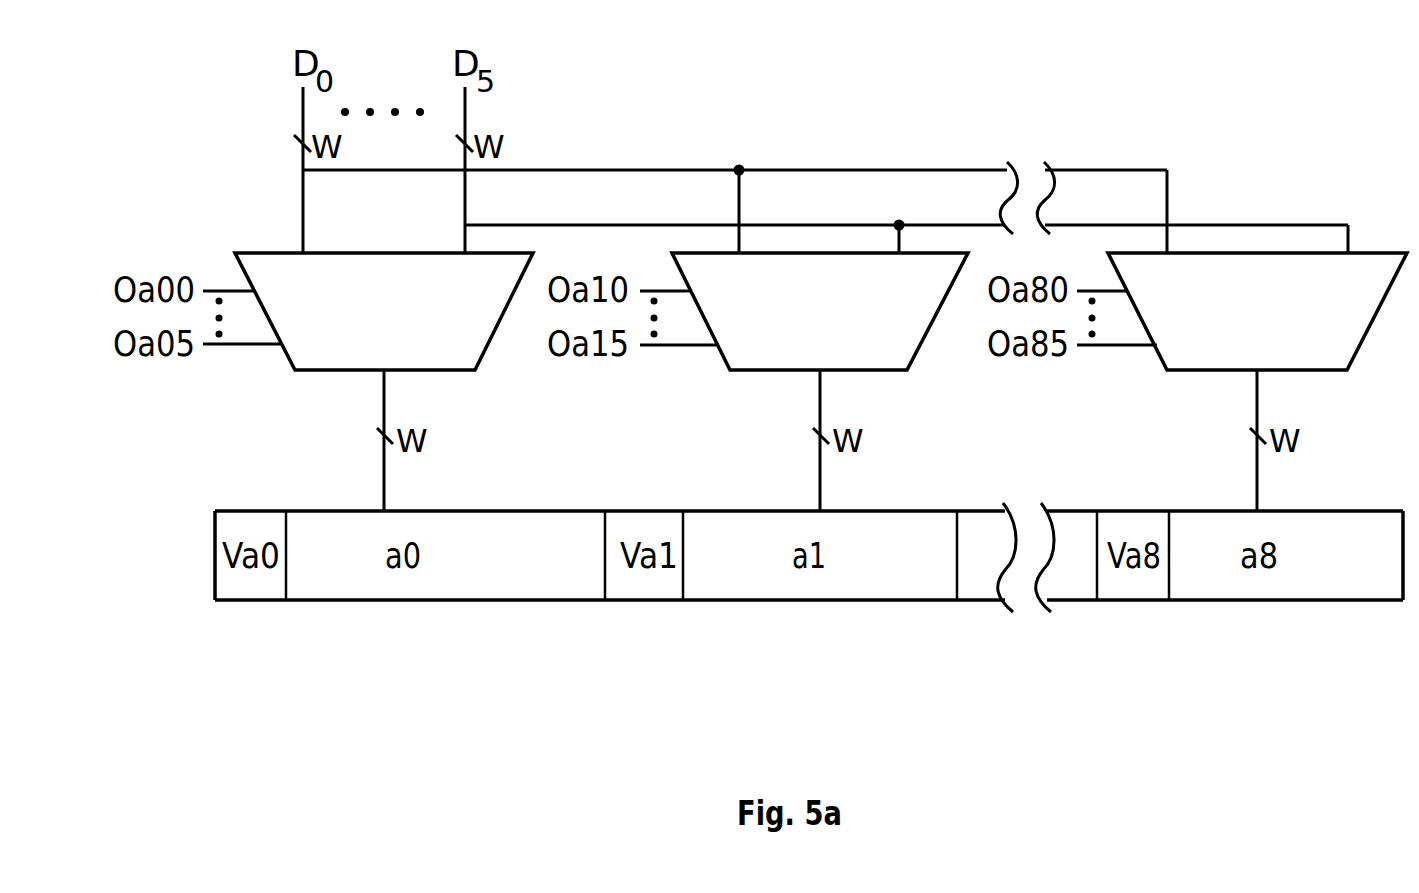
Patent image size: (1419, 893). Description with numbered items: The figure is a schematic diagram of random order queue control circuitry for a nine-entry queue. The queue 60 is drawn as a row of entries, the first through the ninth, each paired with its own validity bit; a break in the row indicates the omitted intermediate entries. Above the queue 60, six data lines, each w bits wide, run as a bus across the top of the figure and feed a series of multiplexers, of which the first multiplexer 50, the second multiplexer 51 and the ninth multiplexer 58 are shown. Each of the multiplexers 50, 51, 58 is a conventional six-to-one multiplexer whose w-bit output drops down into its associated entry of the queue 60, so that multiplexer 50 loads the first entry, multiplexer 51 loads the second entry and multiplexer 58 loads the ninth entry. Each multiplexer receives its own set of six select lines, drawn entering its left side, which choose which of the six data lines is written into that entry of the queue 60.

The multiplexer 50 is at (402, 328).
The multiplexer 51 is at (833, 330).
The multiplexer 58 is at (1273, 328).
The queue 60 is at (495, 602).